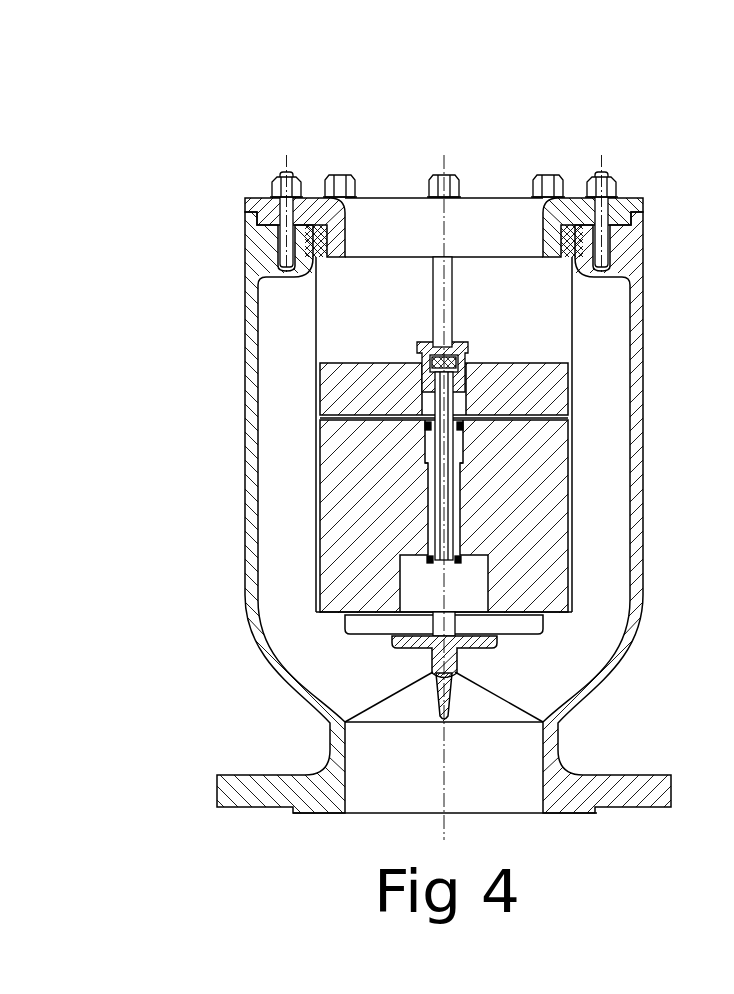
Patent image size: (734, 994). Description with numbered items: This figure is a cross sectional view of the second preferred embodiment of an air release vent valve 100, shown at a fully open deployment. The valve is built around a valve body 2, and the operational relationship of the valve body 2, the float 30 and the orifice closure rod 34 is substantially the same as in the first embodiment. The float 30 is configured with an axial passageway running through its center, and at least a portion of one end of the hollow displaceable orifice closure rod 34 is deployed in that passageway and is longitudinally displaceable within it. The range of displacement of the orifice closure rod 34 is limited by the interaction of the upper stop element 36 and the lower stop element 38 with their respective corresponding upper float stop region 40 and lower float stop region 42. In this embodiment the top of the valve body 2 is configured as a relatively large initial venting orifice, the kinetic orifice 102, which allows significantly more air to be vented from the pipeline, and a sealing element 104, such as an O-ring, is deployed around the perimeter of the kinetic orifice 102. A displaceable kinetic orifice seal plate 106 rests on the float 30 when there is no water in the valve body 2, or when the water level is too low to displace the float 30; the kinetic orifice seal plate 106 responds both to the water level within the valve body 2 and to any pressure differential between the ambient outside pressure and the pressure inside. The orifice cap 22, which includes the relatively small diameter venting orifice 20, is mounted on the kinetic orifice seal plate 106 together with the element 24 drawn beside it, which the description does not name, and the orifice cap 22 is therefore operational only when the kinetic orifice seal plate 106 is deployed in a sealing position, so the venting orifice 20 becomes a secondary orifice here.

The air release vent valve 100 is at (253, 148).
The kinetic orifice 102 is at (507, 213).
The sealing element 104 is at (580, 230).
The valve body 2 is at (630, 620).
The venting orifice 20 is at (430, 340).
The orifice cap 22 is at (470, 346).
The stem seal 24 is at (415, 350).
The upper stop element 36 is at (330, 410).
The kinetic orifice seal plate 106 is at (520, 386).
The orifice closure rod 34 is at (425, 463).
The upper float stop region 40 is at (460, 420).
The float 30 is at (377, 518).
The lower float stop region 42 is at (463, 453).
The lower stop element 38 is at (430, 560).